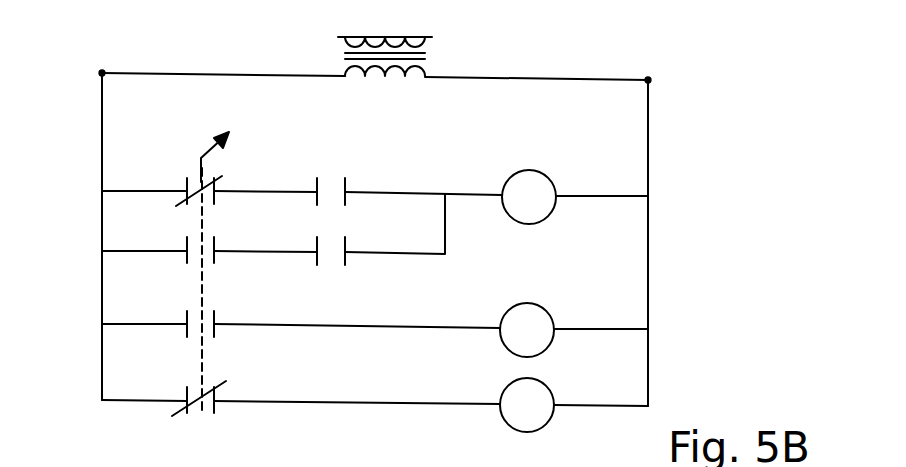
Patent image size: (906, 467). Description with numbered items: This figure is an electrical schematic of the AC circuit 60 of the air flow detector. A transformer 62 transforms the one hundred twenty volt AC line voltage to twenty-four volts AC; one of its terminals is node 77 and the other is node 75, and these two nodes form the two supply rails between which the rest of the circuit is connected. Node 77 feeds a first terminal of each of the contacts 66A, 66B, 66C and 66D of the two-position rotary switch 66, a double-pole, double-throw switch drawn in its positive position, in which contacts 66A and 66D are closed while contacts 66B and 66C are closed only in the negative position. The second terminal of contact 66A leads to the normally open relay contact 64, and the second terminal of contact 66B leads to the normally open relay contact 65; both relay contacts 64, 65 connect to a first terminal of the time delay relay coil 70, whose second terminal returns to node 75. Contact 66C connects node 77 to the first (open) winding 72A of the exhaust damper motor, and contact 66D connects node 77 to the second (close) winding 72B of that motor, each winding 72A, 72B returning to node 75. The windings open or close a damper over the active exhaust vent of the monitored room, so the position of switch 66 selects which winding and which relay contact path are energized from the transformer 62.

The AC circuit 60 is at (682, 277).
The transformer 62 is at (430, 58).
The relay contact 64 is at (348, 185).
The relay contact 65 is at (342, 265).
The two-position rotary switch 66 is at (203, 421).
The contact 66A is at (214, 184).
The contact 66B is at (186, 263).
The contact 66C is at (215, 311).
The contact 66D is at (186, 416).
The time delay relay coil 70 is at (540, 173).
The first (open) winding 72A is at (540, 308).
The second (close) winding 72B is at (545, 425).
The node 75 is at (652, 78).
The node 77 is at (102, 73).